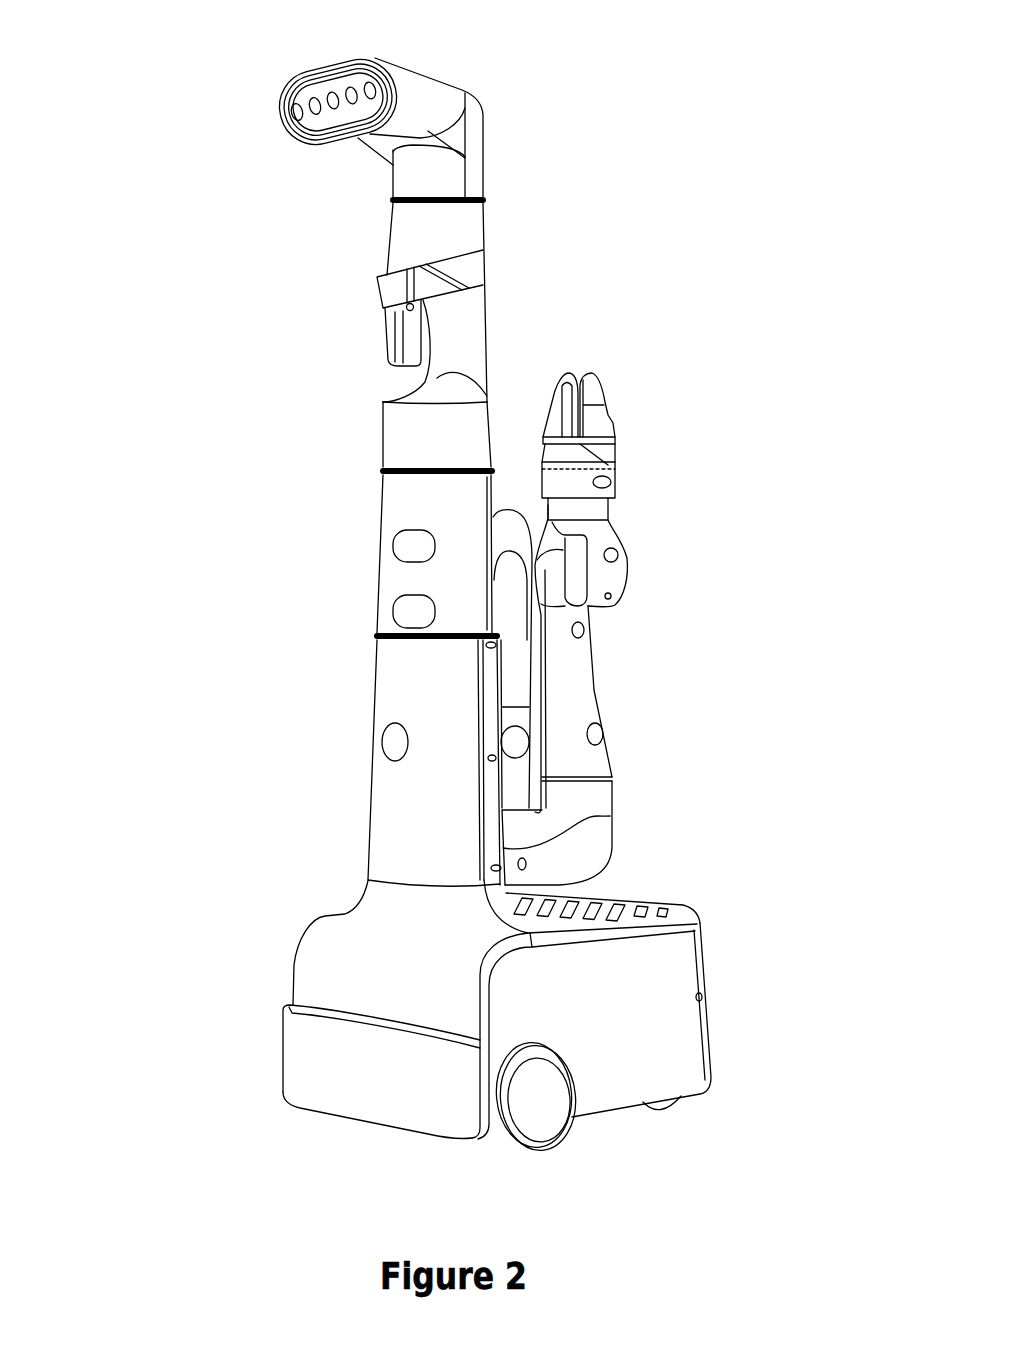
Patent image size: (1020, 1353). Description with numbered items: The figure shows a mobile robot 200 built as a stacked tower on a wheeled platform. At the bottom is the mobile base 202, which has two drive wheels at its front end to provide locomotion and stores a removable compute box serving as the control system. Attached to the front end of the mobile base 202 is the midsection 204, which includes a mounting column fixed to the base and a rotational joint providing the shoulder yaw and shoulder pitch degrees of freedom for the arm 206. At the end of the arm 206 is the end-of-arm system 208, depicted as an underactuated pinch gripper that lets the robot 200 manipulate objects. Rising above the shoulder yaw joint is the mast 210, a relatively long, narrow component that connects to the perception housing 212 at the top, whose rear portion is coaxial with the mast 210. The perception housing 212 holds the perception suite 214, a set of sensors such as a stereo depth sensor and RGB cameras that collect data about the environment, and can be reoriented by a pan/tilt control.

The robot 200 is at (130, 76).
The mobile base 202 is at (742, 990).
The midsection 204 is at (333, 816).
The arm 206 is at (630, 692).
The end-of-arm system (EOAS) 208 is at (625, 387).
The mast 210 is at (511, 301).
The perception housing 212 is at (508, 102).
The perception suite 214 is at (262, 160).